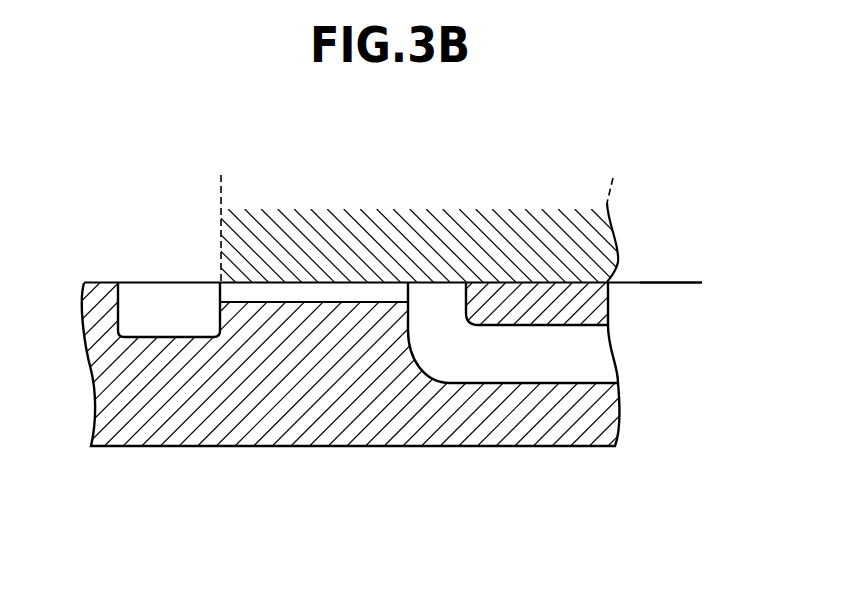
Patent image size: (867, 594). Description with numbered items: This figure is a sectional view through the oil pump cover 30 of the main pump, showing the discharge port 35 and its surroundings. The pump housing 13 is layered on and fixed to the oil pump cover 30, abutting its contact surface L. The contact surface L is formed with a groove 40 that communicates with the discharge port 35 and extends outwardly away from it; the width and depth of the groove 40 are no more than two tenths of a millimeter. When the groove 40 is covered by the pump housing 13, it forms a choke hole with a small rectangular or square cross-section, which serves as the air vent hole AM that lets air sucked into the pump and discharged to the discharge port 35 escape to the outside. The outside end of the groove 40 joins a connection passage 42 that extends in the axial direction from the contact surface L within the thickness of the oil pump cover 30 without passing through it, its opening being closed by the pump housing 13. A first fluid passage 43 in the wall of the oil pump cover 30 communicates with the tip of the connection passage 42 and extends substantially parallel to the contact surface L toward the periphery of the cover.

The pump housing 13 is at (612, 235).
The oil pump cover 30 is at (622, 422).
The discharge port 35 is at (167, 297).
The groove 40 is at (273, 302).
The air vent hole AM is at (350, 292).
The connection passage 42 is at (440, 299).
The first fluid passage 43 is at (545, 367).
The contact surface L is at (683, 281).